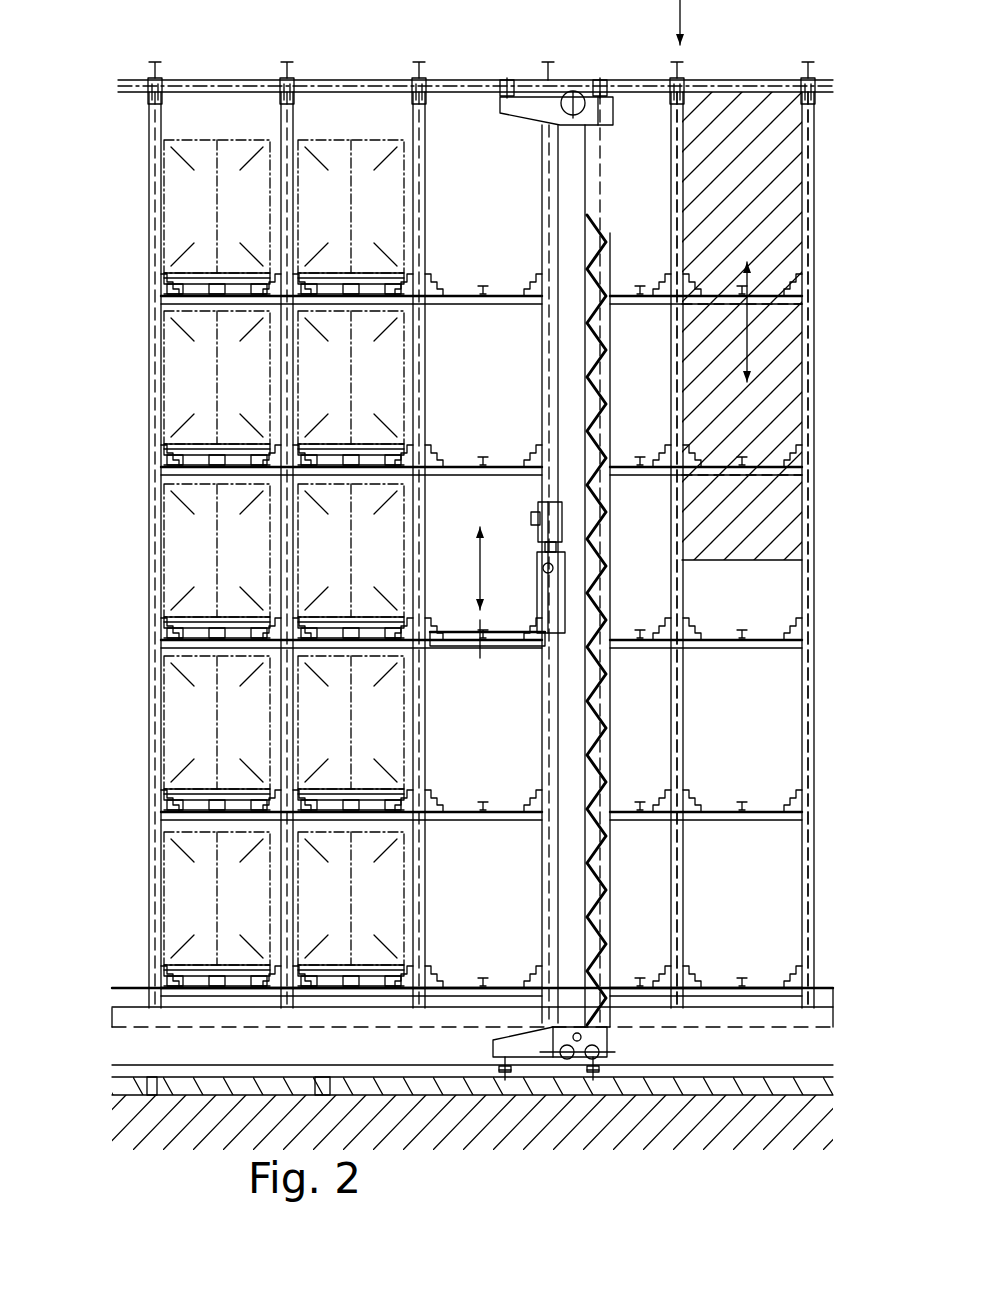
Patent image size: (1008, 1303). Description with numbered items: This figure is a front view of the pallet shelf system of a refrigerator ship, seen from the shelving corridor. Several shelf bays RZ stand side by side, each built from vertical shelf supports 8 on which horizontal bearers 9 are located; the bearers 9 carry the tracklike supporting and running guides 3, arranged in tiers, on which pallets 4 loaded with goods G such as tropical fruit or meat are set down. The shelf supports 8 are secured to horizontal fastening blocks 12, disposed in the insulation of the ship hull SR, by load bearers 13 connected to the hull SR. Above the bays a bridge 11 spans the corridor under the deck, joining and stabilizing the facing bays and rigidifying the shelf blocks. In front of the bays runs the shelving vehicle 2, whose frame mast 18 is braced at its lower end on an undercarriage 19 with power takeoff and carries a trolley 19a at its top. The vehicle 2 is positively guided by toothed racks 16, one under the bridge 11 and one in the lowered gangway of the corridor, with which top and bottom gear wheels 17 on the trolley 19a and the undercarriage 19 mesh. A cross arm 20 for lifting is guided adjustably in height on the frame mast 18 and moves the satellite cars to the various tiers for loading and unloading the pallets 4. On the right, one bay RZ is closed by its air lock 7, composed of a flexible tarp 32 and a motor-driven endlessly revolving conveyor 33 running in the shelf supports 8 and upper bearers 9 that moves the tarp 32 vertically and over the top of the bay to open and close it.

The shelving vehicle 2 is at (602, 559).
The supporting and running guides 3 is at (503, 297).
The pallets 4 is at (203, 275).
The air lock 7 is at (752, 168).
The vertical shelf supports 8 is at (150, 330).
The horizontal bearers 9 is at (156, 96).
The bridge 11 is at (283, 62).
The horizontal fastening blocks 12 is at (148, 1015).
The load bearers 13 is at (795, 996).
The toothed rack 16 is at (455, 87).
The gear wheels 17 is at (507, 80).
The frame mast 18 is at (575, 838).
The undercarriage 19 is at (493, 1044).
The trolley 19a is at (527, 108).
The cross arm 20 is at (552, 612).
The tarp 32 is at (785, 222).
The conveyor 33 is at (676, 362).
The goods G is at (205, 392).
The shelf bays RZ is at (347, 116).
The ship hull SR is at (633, 1113).